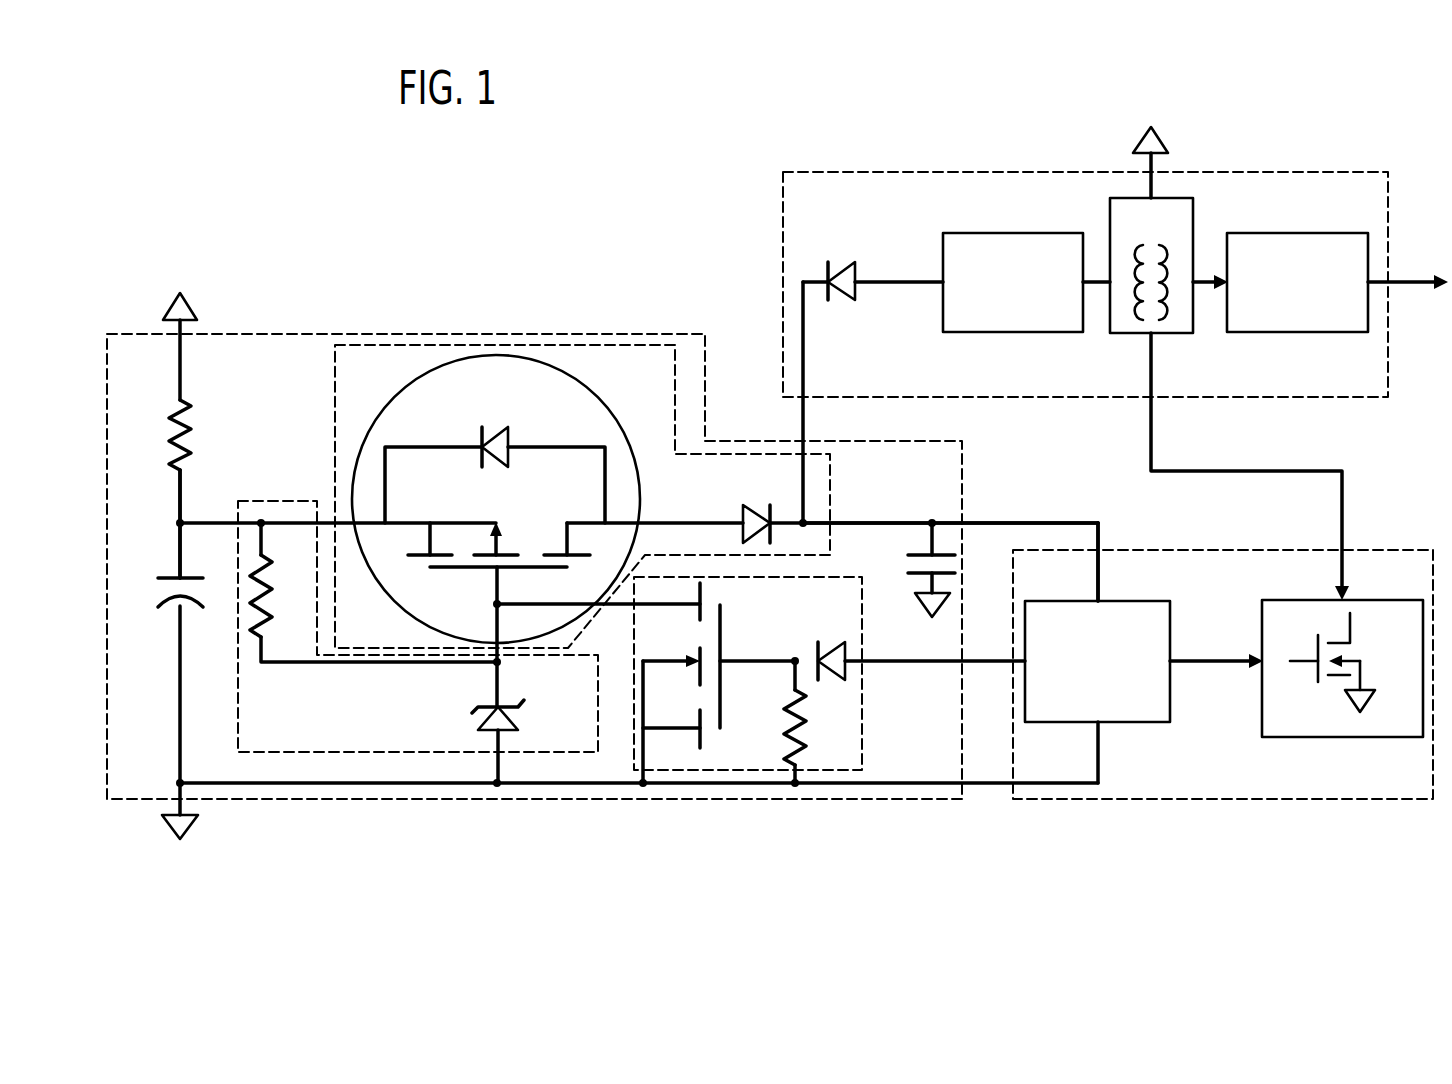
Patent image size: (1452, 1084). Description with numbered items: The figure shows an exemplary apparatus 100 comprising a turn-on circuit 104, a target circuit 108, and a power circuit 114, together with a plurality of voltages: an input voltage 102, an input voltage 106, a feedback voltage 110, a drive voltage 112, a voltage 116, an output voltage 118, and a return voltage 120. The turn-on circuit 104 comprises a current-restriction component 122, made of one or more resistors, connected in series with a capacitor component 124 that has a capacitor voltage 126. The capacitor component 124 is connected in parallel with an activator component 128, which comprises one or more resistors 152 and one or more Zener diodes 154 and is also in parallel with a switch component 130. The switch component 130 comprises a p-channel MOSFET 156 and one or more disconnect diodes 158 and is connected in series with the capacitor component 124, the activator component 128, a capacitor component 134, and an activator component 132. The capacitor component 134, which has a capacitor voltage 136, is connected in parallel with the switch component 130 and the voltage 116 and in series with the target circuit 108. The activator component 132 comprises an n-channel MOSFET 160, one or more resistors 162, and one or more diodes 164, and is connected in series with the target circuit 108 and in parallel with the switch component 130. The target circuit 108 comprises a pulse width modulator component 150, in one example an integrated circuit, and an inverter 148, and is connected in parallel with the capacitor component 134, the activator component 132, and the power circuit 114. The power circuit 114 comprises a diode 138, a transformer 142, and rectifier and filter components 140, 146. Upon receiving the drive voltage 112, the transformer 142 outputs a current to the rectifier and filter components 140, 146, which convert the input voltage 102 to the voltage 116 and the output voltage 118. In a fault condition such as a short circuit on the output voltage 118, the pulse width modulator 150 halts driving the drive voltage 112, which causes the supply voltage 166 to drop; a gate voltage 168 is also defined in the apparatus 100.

The apparatus 100 is at (371, 207).
The input voltage 102 is at (172, 303).
The turn-on circuit 104 is at (271, 334).
The input voltage 106 is at (1051, 523).
The target circuit 108 is at (1205, 799).
The feedback voltage 110 is at (918, 728).
The drive voltage 112 is at (1275, 471).
The power circuit 114 is at (1013, 172).
The voltage 116 is at (806, 420).
The output voltage 118 is at (1426, 247).
The return voltage 120 is at (193, 830).
The current-restriction component 122 is at (170, 438).
The capacitor component 124 is at (190, 585).
The capacitor voltage 126 is at (124, 568).
The activator component 128 is at (238, 723).
The switch component 130 is at (594, 341).
The activator component 132 is at (720, 772).
The capacitor component 134 is at (940, 550).
The capacitor voltage 136 is at (858, 555).
The diode 138 is at (840, 300).
The rectifier and filter component 140 is at (1015, 332).
The transformer 142 is at (1108, 220).
The rectifier and filter component 146 is at (1295, 232).
The inverter 148 is at (1347, 769).
The pulse width modulator component 150 is at (1140, 722).
The resistor 152 is at (258, 570).
The Zener diode 154 is at (478, 714).
The p-channel MOSFET 156 is at (388, 407).
The disconnect diode 158 is at (742, 531).
The n-channel MOSFET 160 is at (672, 660).
The resistor 162 is at (825, 740).
The diode 164 is at (830, 686).
The supply voltage 166 is at (848, 227).
The gate voltage 168 is at (1217, 710).